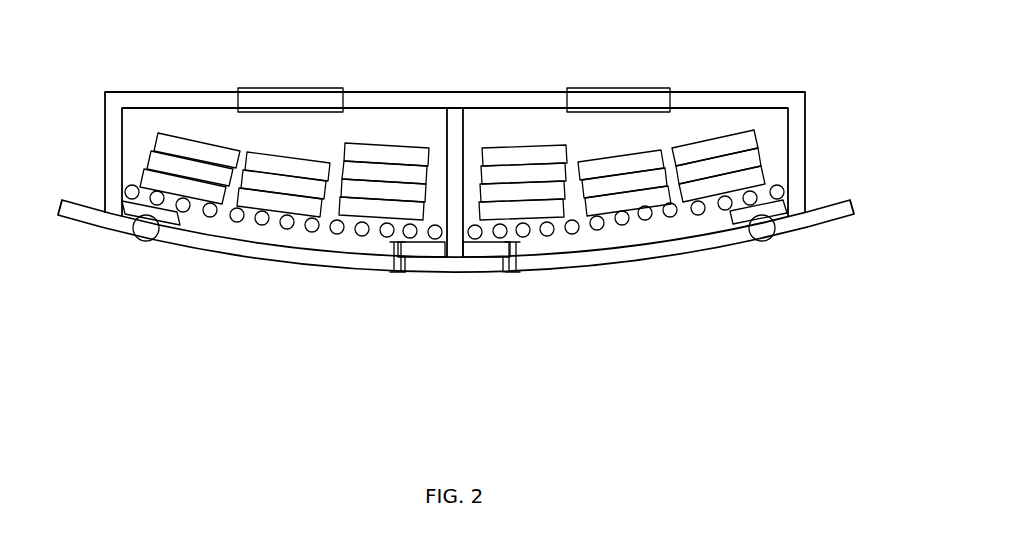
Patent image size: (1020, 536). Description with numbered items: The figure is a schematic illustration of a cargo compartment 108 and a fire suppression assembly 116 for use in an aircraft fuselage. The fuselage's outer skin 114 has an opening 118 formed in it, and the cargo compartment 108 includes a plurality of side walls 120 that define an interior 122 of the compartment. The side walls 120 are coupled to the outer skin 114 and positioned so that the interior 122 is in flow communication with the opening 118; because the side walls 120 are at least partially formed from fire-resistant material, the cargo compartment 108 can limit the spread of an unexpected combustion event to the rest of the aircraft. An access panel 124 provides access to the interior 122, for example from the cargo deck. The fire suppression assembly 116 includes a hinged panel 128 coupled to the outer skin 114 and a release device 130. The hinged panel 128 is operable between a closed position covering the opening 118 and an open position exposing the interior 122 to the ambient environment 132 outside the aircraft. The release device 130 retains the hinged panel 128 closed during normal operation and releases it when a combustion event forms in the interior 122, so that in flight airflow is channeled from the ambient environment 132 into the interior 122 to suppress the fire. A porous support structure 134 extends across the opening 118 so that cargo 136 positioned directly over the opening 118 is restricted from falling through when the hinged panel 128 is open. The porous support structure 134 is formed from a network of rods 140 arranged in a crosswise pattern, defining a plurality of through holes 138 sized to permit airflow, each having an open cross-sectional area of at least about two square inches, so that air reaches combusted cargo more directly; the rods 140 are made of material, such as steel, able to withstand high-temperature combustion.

The cargo compartment 108 is at (93, 96).
The outer skin 114 is at (813, 228).
The fire suppression assembly 116 is at (802, 262).
The opening 118 is at (545, 292).
The side walls 120 is at (463, 122).
The interior 122 is at (551, 137).
The access panel 124 is at (601, 88).
The hinged panel 128 is at (720, 247).
The release device 130 is at (503, 277).
The ambient environment 132 is at (467, 372).
The porous support structure 134 is at (791, 185).
The cargo 136 is at (590, 160).
The through holes 138 is at (635, 229).
The rods 140 is at (645, 223).